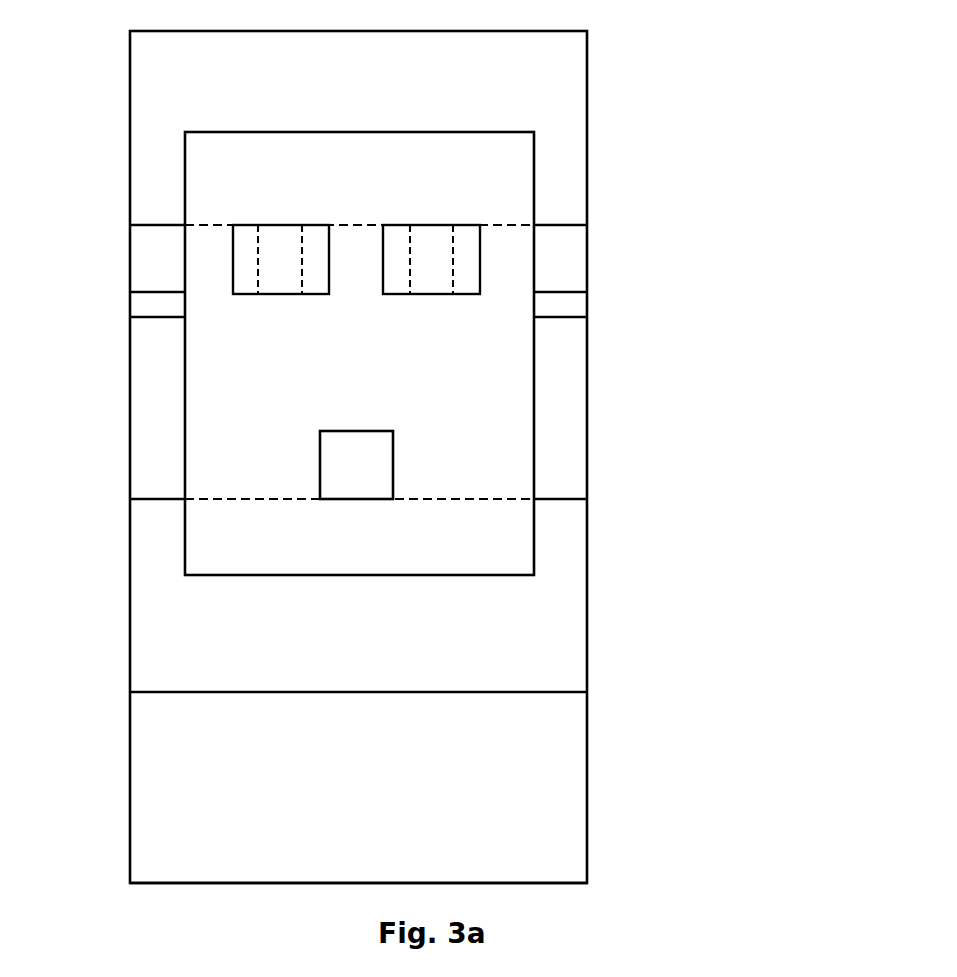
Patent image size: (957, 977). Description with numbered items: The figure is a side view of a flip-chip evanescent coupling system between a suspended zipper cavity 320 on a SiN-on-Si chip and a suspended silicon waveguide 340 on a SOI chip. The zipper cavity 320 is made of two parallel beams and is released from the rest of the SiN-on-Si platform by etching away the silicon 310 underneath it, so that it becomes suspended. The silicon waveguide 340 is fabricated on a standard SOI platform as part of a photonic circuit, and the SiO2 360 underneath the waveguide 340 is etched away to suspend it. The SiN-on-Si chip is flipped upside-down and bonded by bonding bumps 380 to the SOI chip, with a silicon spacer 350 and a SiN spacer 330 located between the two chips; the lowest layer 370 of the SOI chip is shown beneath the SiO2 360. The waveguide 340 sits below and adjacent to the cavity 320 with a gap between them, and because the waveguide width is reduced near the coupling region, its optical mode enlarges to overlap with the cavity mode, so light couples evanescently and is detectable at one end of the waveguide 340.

The silicon 310 is at (556, 70).
The suspended zipper cavity 320 is at (373, 209).
The SiN spacer 330 is at (556, 252).
The suspended silicon waveguide 340 is at (329, 467).
The silicon spacer 350 is at (567, 433).
The SiO2 360 is at (509, 607).
The substrate layer 370 is at (516, 790).
The bonding bumps 380 is at (153, 307).